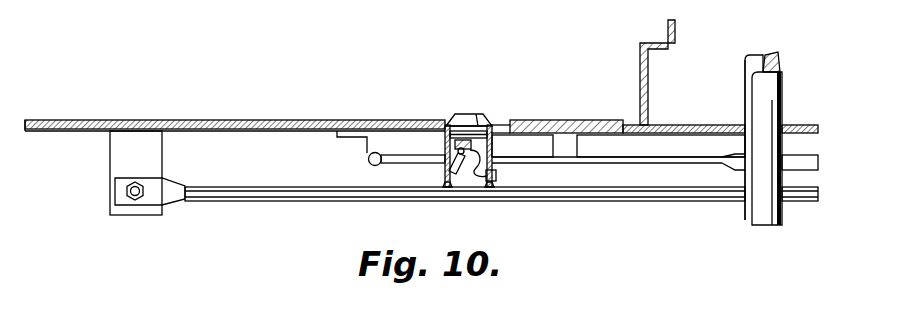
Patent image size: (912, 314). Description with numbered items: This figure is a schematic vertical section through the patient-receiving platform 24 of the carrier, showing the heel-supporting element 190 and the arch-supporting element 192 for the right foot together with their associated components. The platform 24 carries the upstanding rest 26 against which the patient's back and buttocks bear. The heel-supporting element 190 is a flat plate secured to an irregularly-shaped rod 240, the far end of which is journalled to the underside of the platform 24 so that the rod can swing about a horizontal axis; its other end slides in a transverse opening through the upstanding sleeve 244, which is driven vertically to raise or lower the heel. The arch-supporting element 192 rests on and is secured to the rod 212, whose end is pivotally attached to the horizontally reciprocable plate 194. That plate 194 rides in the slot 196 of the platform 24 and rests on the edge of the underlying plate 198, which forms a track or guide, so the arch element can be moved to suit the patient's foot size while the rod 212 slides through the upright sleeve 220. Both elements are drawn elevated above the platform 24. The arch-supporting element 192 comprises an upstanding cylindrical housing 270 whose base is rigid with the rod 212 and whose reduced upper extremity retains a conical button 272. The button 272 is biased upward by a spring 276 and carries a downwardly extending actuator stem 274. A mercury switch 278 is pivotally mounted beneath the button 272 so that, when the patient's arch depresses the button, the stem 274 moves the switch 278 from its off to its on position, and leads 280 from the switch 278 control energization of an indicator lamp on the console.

The patient-receiving platform 24 is at (38, 120).
The upstanding rest 26 is at (668, 26).
The heel-supporting element 190 is at (559, 120).
The arch-supporting element 192 is at (455, 121).
The horizontally reciprocable plate 194 is at (297, 119).
The slot 196 is at (41, 131).
The plate 198 is at (172, 138).
The rod 212 is at (531, 199).
The upright sleeve 220 is at (772, 223).
The irregularly-shaped rod 240 is at (690, 157).
The upstanding sleeve 244 is at (745, 210).
The cylindrical housing 270 is at (446, 176).
The conical button 272 is at (469, 112).
The actuator stem 274 is at (493, 146).
The spring 276 is at (446, 146).
The mercury switch 278 is at (459, 166).
The leads 280 is at (500, 176).